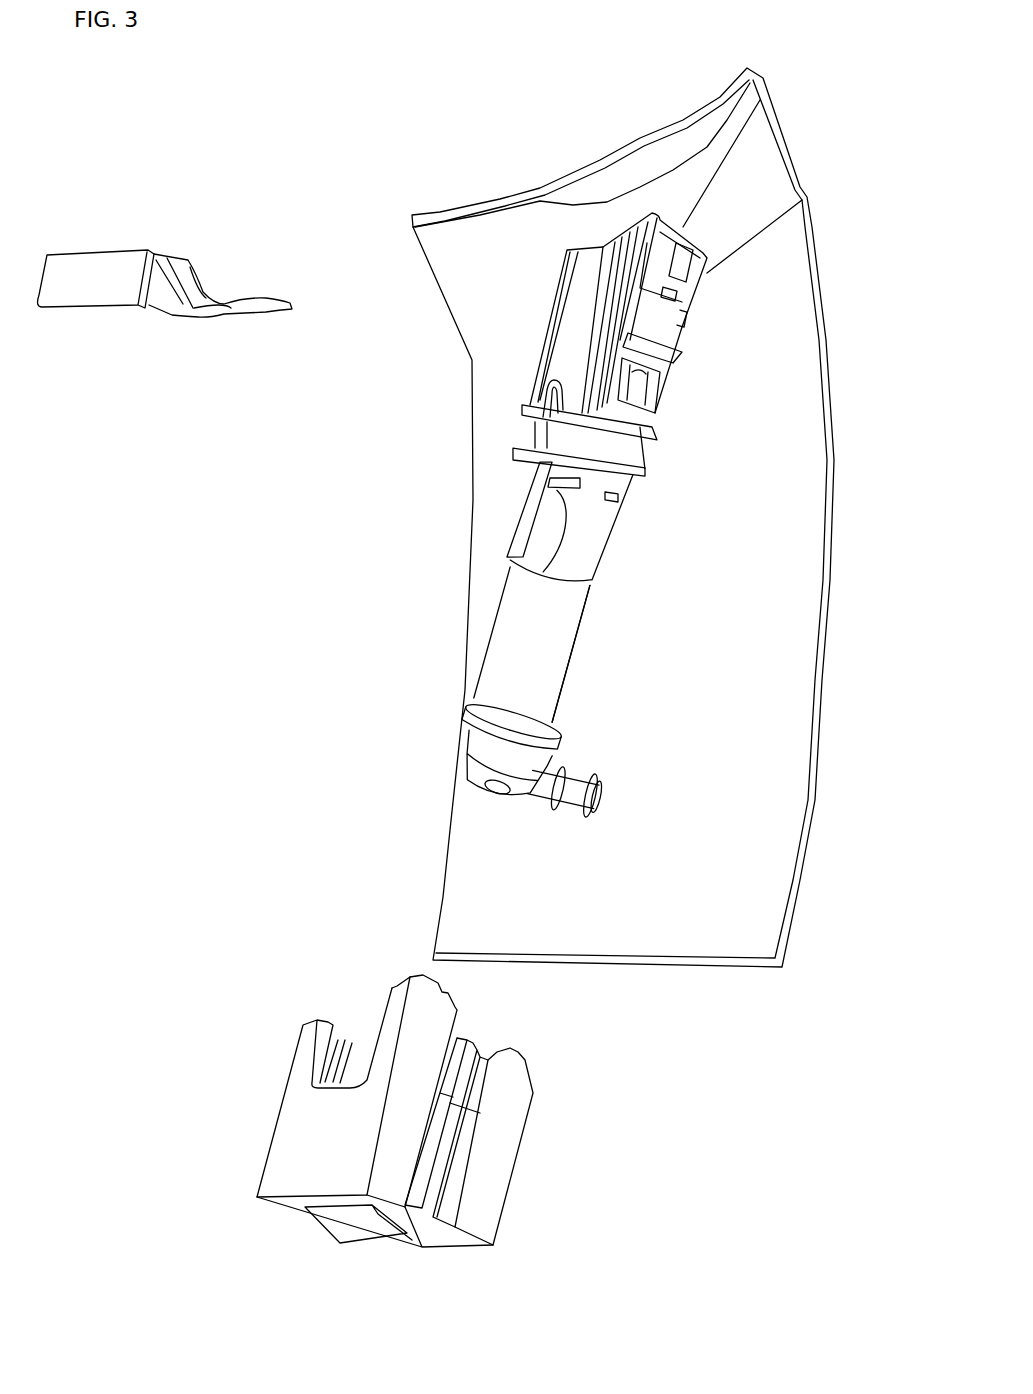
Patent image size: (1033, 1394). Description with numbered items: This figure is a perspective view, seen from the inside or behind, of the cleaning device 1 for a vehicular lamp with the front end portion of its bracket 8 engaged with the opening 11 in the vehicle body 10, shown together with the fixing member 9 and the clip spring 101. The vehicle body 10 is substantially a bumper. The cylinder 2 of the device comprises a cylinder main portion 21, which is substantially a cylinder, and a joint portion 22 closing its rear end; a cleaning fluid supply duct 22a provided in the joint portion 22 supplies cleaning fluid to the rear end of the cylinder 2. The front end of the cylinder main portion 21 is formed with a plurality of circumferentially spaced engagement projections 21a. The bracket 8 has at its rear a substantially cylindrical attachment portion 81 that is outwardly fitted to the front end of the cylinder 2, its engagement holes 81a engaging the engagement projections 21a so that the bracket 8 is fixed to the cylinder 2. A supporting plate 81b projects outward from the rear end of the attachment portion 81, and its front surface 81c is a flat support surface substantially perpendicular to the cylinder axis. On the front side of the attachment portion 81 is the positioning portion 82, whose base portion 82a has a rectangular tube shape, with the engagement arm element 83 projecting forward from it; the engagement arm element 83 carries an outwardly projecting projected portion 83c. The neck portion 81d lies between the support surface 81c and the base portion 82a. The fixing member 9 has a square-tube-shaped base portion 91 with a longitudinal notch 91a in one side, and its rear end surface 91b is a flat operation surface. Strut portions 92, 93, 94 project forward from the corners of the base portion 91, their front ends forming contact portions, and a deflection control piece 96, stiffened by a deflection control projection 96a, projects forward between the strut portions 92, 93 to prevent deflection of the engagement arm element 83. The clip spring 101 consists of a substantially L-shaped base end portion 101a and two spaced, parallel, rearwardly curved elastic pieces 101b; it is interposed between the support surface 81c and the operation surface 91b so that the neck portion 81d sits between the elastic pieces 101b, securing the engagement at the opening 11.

The cleaning device for a vehicular lamp 1 is at (500, 497).
The cylinder 2 is at (570, 648).
The bracket 8 is at (607, 563).
The fixing member 9 is at (518, 1191).
The vehicle body 10 is at (653, 517).
The opening 11 is at (680, 227).
The cylinder main portion 21 is at (493, 663).
The engagement projections 21a is at (548, 523).
The joint portion 22 is at (463, 733).
The cleaning fluid supply duct 22a is at (537, 797).
The attachment portion 81 is at (593, 548).
The engagement holes 81a is at (553, 567).
The supporting plate 81b is at (613, 442).
The support surface 81c is at (663, 393).
The neck portion 81d is at (540, 437).
The positioning portion 82 is at (537, 313).
The base portion 82a is at (557, 363).
The engagement arm element 83 is at (757, 322).
The projected portion 83c is at (687, 280).
The base portion 91 is at (282, 1142).
The notch 91a is at (413, 1237).
The rear end surface 91b is at (287, 1203).
The strut portion 92 is at (527, 1087).
The strut portion 93 is at (412, 982).
The strut portion 94 is at (313, 1032).
The deflection control piece 96 is at (460, 1042).
The deflection control projection 96a is at (483, 1052).
The clip spring 101 is at (168, 284).
The base end portion 101a is at (86, 292).
The elastic pieces 101b is at (180, 320).